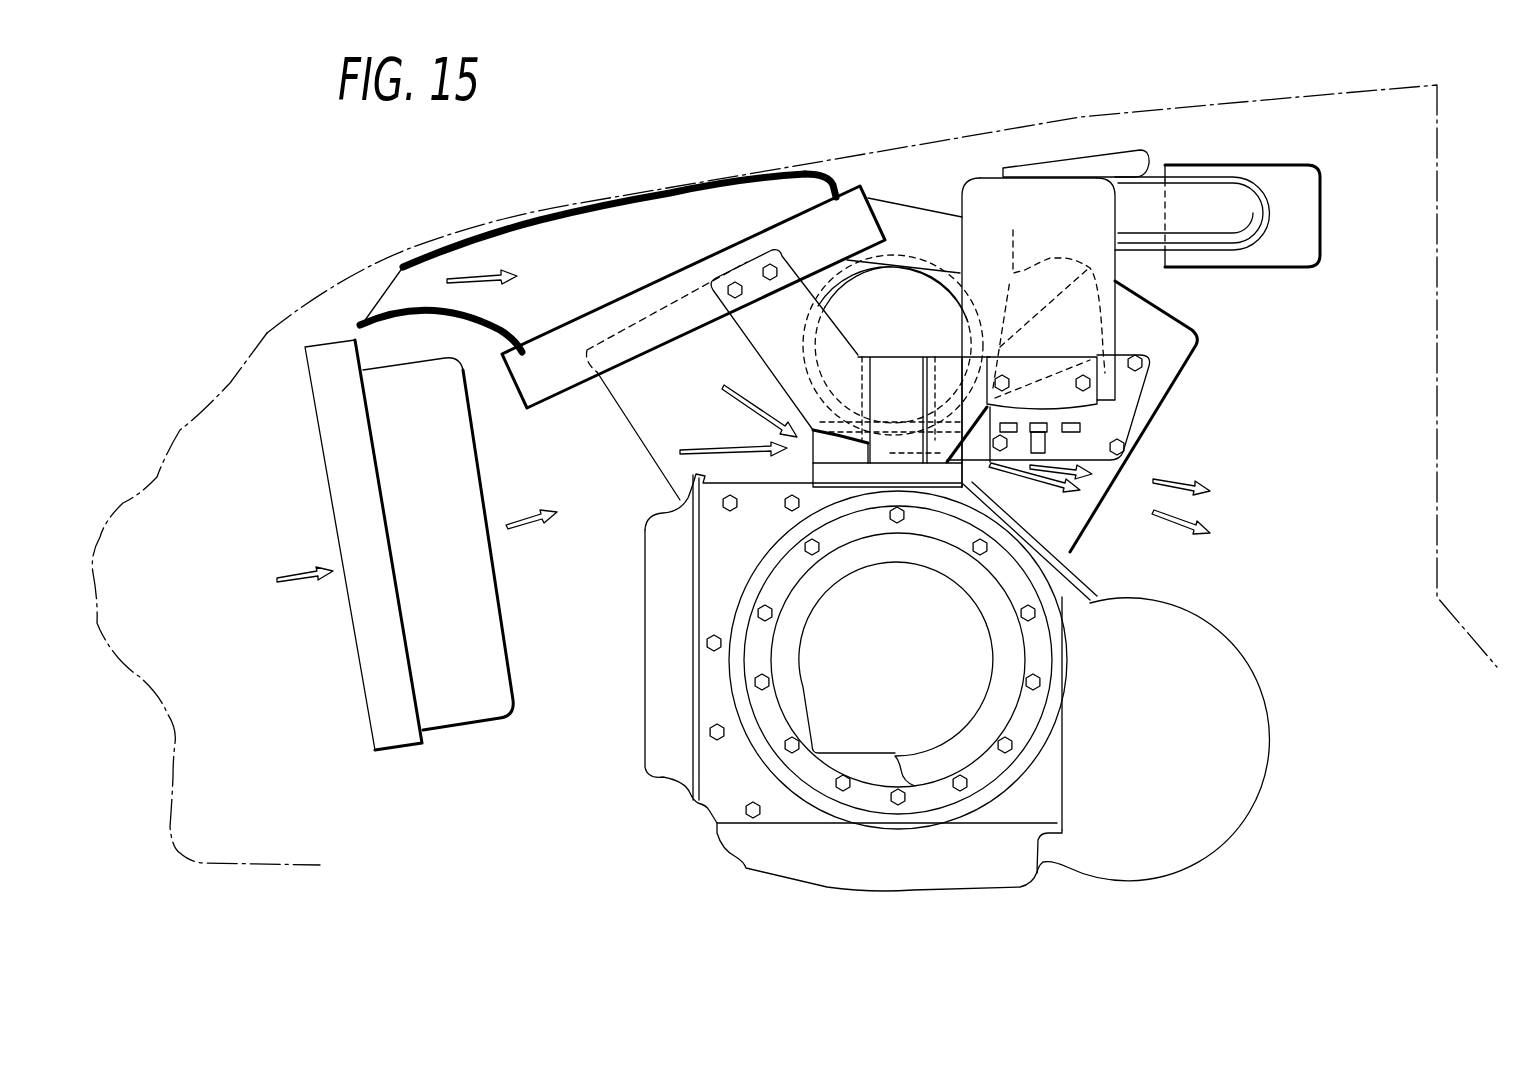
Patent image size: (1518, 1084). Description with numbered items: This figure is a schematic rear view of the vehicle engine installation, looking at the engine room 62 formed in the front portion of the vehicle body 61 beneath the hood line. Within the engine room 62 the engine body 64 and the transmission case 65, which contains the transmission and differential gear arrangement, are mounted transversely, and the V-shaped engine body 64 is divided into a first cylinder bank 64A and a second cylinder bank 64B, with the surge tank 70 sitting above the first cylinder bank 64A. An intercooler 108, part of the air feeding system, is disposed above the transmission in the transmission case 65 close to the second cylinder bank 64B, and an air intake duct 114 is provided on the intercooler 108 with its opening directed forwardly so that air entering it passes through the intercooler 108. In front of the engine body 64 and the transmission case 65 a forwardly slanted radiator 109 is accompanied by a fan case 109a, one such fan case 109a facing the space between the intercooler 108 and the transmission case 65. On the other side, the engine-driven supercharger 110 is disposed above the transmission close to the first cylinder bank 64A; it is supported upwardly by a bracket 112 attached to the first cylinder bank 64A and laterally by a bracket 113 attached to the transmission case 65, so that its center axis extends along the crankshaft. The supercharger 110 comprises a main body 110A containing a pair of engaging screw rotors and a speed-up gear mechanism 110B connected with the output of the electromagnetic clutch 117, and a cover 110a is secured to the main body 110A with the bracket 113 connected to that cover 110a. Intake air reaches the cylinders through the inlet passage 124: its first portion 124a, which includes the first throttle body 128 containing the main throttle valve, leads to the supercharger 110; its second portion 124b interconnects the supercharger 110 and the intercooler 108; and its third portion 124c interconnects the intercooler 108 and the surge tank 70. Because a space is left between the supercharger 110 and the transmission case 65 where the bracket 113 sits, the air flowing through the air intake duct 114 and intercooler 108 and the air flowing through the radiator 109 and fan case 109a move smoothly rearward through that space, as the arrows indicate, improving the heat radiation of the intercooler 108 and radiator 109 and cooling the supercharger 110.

The vehicle body 61 is at (313, 297).
The engine room 62 is at (262, 470).
The engine body 64 is at (1106, 525).
The first cylinder bank 64A is at (1173, 377).
The second cylinder bank 64B is at (630, 415).
The transmission case 65 is at (723, 793).
The surge tank 70 is at (1105, 160).
The intercooler 108 is at (523, 390).
The radiator 109 is at (398, 738).
The fan case 109a is at (478, 712).
The engine-driven supercharger 110 is at (955, 265).
The main body 110A is at (1038, 332).
The cover 110a is at (1037, 193).
The speed-up gear mechanism 110B is at (833, 193).
The bracket 112 is at (1145, 405).
The bracket 113 is at (780, 377).
The air intake duct 114 is at (637, 197).
The electromagnetic clutch 117 is at (827, 290).
The inlet passage 124 is at (1184, 165).
The first portion 124a is at (1220, 190).
The second portion 124b is at (900, 217).
The third portion 124c is at (957, 187).
The first throttle body 128 is at (1303, 170).